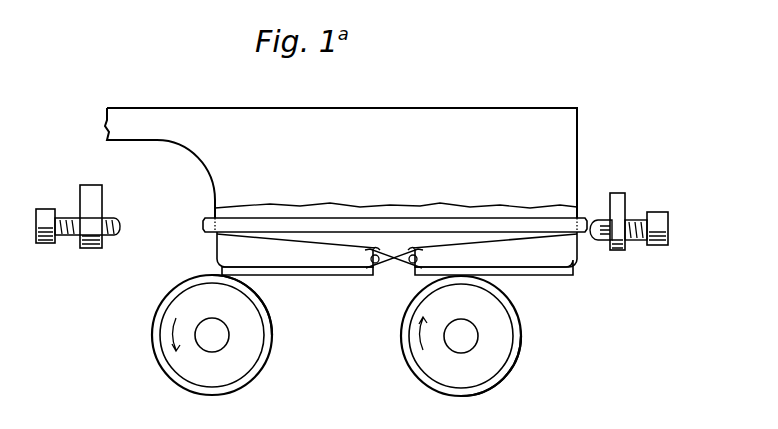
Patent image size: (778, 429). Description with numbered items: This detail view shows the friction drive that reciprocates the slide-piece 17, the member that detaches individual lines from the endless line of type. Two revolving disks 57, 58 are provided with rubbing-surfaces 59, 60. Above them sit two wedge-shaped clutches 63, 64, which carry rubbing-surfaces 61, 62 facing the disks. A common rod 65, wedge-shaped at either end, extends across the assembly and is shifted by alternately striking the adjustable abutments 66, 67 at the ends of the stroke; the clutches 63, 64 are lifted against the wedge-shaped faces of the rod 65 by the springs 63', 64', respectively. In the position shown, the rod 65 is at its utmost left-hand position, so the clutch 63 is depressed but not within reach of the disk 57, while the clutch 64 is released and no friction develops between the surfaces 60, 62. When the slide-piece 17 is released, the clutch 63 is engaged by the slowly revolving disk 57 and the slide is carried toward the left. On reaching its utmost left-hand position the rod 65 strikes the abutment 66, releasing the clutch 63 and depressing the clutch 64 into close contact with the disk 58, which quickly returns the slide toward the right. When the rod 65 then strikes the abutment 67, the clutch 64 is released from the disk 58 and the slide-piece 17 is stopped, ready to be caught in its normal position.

The slide-piece 17 is at (341, 163).
The revolving disk 57 is at (212, 335).
The revolving disk 58 is at (461, 336).
The rubbing-surface 59 is at (268, 311).
The rubbing-surface 60 is at (519, 340).
The rubbing-surface 61 is at (327, 271).
The rubbing-surface 62 is at (560, 276).
The wedge-shaped clutch 63 is at (296, 249).
The wedge-shaped clutch 64 is at (495, 249).
The spring 63' is at (394, 276).
The spring 64' is at (389, 281).
The common rod 65 is at (395, 226).
The adjustable abutment 66 is at (104, 230).
The adjustable abutment 67 is at (601, 242).